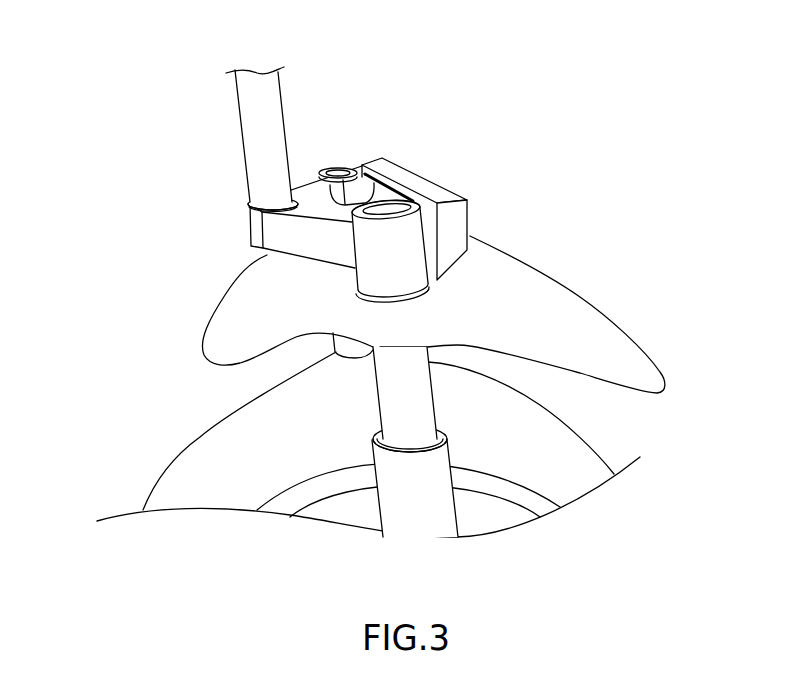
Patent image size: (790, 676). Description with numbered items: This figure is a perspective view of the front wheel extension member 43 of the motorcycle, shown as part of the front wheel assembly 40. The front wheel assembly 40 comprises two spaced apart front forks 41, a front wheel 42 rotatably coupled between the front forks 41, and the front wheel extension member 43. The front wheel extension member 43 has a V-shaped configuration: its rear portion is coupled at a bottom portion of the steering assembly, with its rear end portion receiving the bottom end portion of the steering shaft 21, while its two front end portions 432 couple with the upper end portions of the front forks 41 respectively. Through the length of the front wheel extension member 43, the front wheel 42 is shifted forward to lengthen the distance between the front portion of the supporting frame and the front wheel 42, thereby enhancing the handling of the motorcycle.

The steering shaft 21 is at (262, 122).
The front wheel assembly 40 is at (80, 354).
The front fork 41 is at (347, 343).
The front wheel 42 is at (223, 447).
The front wheel extension member 43 is at (521, 79).
The front end portion 432 is at (340, 170).